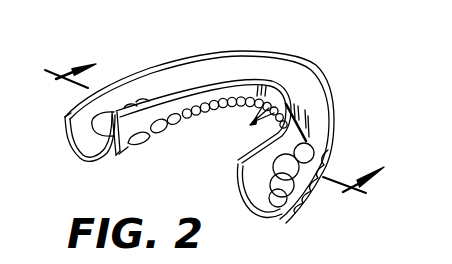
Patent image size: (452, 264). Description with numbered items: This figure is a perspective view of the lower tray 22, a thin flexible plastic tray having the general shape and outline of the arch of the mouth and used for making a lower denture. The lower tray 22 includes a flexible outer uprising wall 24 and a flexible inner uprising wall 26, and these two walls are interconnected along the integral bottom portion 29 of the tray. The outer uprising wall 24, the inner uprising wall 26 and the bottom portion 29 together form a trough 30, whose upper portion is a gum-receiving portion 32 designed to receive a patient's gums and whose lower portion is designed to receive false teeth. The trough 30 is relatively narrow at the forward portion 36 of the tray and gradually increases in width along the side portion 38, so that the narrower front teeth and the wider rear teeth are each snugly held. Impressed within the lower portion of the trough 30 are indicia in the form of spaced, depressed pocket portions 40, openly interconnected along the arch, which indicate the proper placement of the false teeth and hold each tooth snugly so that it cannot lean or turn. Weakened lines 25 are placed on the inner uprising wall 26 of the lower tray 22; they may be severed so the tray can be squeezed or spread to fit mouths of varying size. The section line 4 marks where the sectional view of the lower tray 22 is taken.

The lower tray 22 is at (334, 115).
The outer uprising wall 24 is at (82, 130).
The weakened lines 25 is at (248, 120).
The inner uprising wall 26 is at (199, 114).
The bottom portion 29 is at (84, 161).
The trough 30 is at (322, 143).
The gum-receiving portion 32 is at (107, 107).
The forward portion 36 is at (307, 98).
The side portion 38 is at (197, 63).
The depressed pocket portions 40 is at (137, 146).
The section line 4- 4 is at (202, 128).